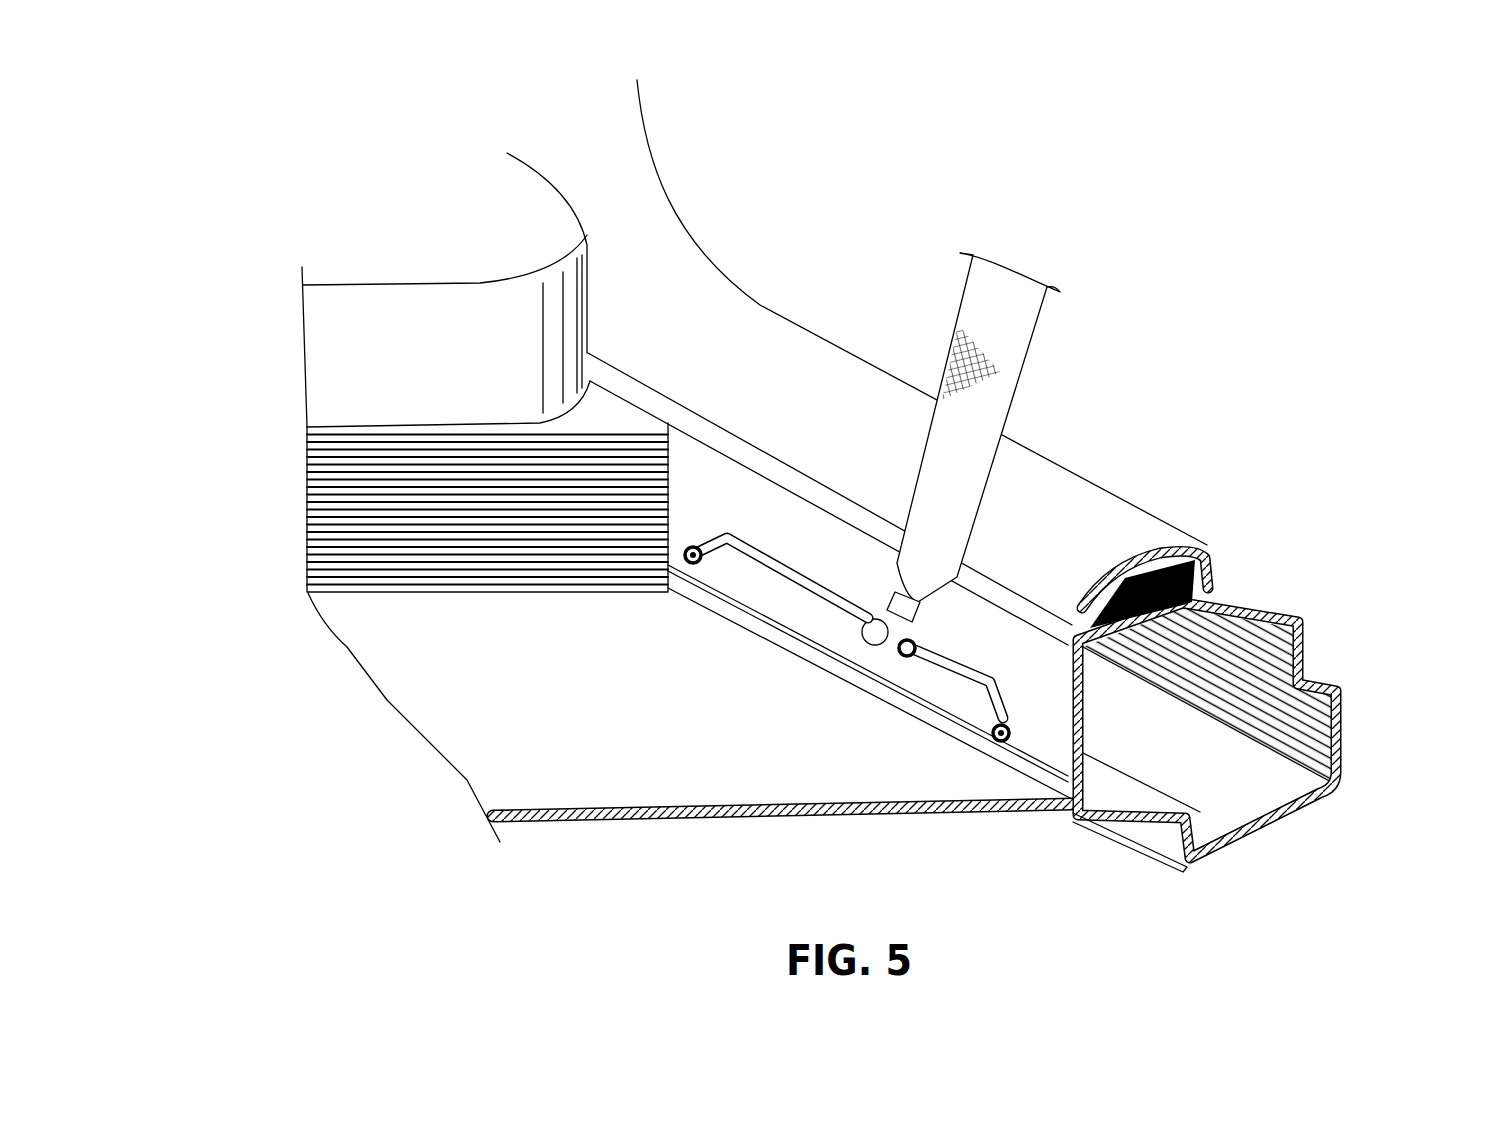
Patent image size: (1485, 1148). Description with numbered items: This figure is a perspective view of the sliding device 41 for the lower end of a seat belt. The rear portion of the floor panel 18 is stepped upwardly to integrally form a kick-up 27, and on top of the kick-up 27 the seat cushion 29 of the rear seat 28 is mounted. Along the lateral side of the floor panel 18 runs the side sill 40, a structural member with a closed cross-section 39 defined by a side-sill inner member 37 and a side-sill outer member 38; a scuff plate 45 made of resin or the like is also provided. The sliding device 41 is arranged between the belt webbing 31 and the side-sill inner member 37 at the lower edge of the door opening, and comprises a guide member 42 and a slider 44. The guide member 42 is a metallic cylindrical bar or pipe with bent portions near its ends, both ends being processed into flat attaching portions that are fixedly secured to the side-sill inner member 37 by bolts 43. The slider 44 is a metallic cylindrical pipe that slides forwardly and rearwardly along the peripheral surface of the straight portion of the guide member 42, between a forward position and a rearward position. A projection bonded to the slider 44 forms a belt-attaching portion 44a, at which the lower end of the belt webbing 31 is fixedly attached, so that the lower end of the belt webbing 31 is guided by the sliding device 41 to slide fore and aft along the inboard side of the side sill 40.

The floor panel 18 is at (622, 822).
The kick-up 27 is at (305, 498).
The rear seat 28 is at (320, 215).
The seat cushion 29 is at (408, 312).
The belt webbing 31 is at (1030, 312).
The side-sill inner member 37 is at (1083, 725).
The side-sill outer member 38 is at (1345, 722).
The closed cross-section 39 is at (1215, 763).
The side sill 40 is at (1300, 607).
The sliding device 41 is at (740, 650).
The guide member 42 is at (793, 568).
The bolts 43 is at (695, 548).
The slider 44 is at (878, 645).
The belt-attaching portion 44a is at (893, 600).
The scuff plate 45 is at (1112, 522).